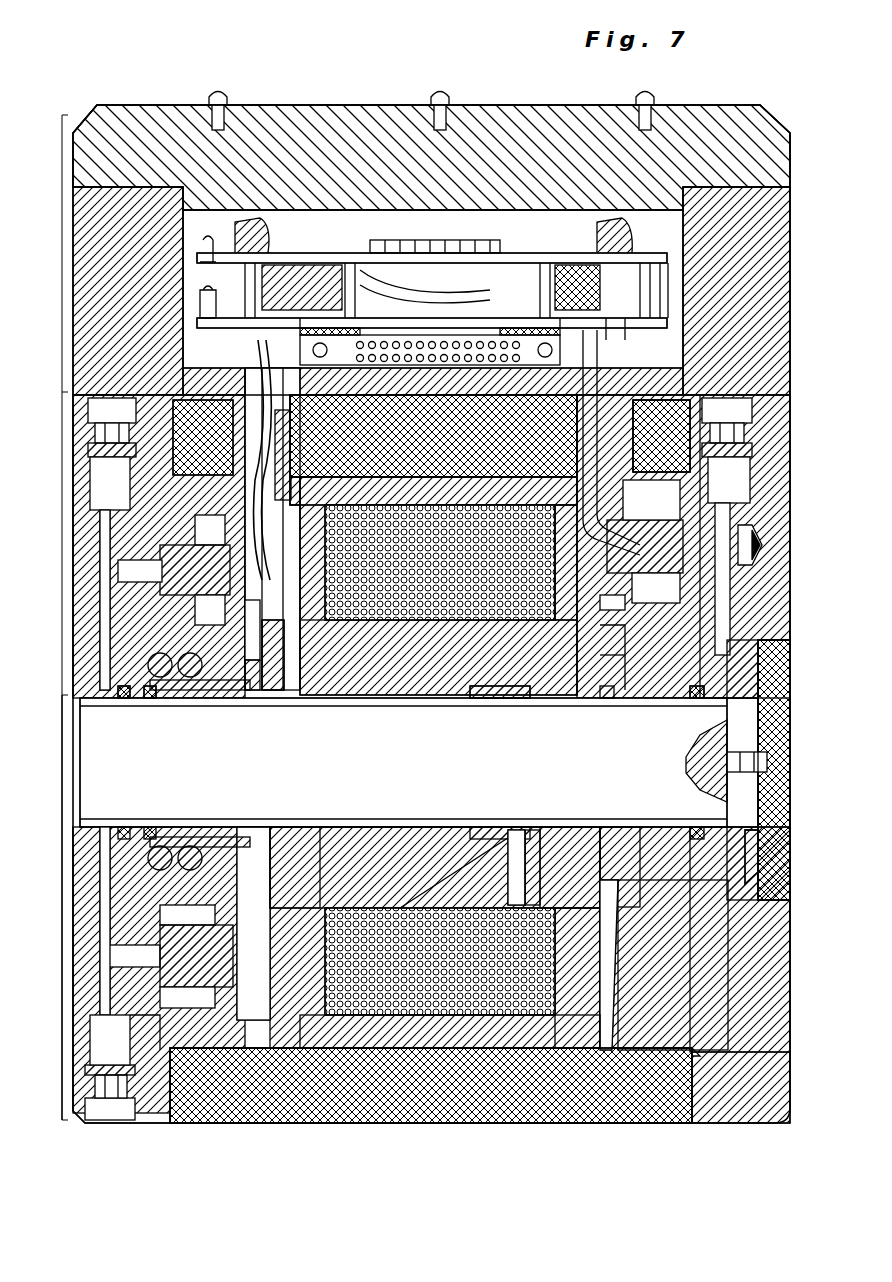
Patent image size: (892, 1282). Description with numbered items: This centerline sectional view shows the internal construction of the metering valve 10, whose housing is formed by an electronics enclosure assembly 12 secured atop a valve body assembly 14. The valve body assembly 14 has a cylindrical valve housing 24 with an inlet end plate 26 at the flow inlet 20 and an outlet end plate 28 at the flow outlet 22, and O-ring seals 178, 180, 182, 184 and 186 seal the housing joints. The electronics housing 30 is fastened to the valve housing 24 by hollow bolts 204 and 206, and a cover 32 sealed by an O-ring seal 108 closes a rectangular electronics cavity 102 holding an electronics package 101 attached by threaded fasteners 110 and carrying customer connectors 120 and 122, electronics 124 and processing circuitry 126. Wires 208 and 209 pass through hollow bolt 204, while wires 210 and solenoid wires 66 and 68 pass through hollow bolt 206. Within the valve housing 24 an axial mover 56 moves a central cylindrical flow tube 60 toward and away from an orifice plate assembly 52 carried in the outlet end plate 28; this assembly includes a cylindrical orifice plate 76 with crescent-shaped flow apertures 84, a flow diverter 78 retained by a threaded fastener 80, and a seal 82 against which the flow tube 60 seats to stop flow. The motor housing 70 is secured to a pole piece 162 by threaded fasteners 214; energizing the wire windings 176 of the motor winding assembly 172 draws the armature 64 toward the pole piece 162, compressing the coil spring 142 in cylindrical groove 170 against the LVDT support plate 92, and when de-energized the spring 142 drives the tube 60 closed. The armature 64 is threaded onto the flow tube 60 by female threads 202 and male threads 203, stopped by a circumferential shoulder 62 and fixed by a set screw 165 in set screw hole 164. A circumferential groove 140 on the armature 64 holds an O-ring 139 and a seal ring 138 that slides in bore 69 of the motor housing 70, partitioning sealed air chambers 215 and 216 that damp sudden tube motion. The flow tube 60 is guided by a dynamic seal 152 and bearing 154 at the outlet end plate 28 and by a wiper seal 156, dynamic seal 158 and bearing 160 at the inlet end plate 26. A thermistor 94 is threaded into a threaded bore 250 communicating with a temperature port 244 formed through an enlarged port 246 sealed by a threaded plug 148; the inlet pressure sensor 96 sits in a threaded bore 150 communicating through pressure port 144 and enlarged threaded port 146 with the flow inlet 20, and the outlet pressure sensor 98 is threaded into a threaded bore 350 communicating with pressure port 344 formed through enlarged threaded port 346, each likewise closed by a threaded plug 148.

The metering valve 10 is at (68, 74).
The electronics enclosure assembly 12 is at (190, 298).
The valve body assembly 14 is at (62, 792).
The flow inlet 20 is at (68, 762).
The flow outlet 22 is at (804, 824).
The cylindrical valve housing 24 is at (220, 446).
The inlet end plate 26 is at (82, 659).
The outlet end plate 28 is at (752, 472).
The electronics housing 30 is at (790, 288).
The cover 32 is at (792, 152).
The orifice plate assembly 52 is at (806, 652).
The axial mover 56 is at (548, 1056).
The central cylindrical flow tube 60 is at (285, 699).
The circumferential shoulder 62 is at (612, 836).
The armature 64 is at (540, 663).
The solenoid wire 66 is at (580, 366).
The solenoid wire 68 is at (622, 343).
The bore 69 is at (588, 934).
The motor housing 70 is at (515, 503).
The cylindrical orifice plate 76 is at (790, 713).
The flow diverter 78 is at (700, 757).
The threaded fastener 80 is at (770, 757).
The seal 82 is at (762, 683).
The crescent-shaped flow apertures 84 is at (760, 848).
The LVDT support plate 92 is at (295, 827).
The temperature inlet sensor 94 is at (203, 579).
The inlet pressure sensor 96 is at (200, 969).
The outlet pressure sensor 98 is at (670, 551).
The electronics package 101 is at (672, 235).
The electronics cavity 102 is at (440, 224).
The O-ring seal 108 is at (165, 130).
The threaded fasteners 110 is at (215, 250).
The customer connector 120 is at (270, 240).
The customer connector 122 is at (597, 240).
The electronics 124 is at (200, 284).
The processing circuitry 126 is at (187, 333).
The seal ring 138 is at (618, 603).
The O-ring 139 is at (628, 638).
The circumferential groove 140 is at (628, 668).
The coil spring 142 is at (188, 842).
The pressure port 144 is at (100, 985).
The enlarged threaded port 146 is at (112, 1040).
The threaded plug 148 is at (90, 410).
The threaded bore 150 is at (108, 956).
The dynamic seal 152 is at (718, 699).
The circumferential bearing 154 is at (612, 699).
The wiper seal 156 is at (124, 699).
The dynamic seal 158 is at (151, 699).
The circumferential bearing 160 is at (248, 699).
The pole piece 162 is at (346, 663).
The threaded set screw hole 164 is at (568, 830).
The threaded set screw 165 is at (485, 830).
The cylindrical groove 170 is at (190, 699).
The motor winding assembly 172 is at (386, 1081).
The wire windings 176 is at (431, 663).
The O-ring seal 178 is at (724, 900).
The O-ring seal 180 is at (702, 1052).
The O-ring seal 182 is at (624, 924).
The O-ring seal 184 is at (306, 1079).
The O-ring seal 186 is at (165, 1048).
The female threads 202 is at (515, 707).
The male threads 203 is at (490, 699).
The hollow bolt 204 is at (242, 382).
The hollow bolt 206 is at (672, 380).
The wire 208 is at (285, 584).
The wire 209 is at (262, 905).
The wires 210 is at (540, 441).
The threaded fastener 214 is at (388, 503).
The sealed air chamber 215 is at (255, 636).
The sealed air chamber 216 is at (640, 905).
The temperature port 244 is at (100, 540).
The enlarged port 246 is at (125, 496).
The threaded bore 250 is at (122, 572).
The pressure port 344 is at (730, 585).
The enlarged threaded port 346 is at (738, 478).
The threaded bore 350 is at (764, 540).